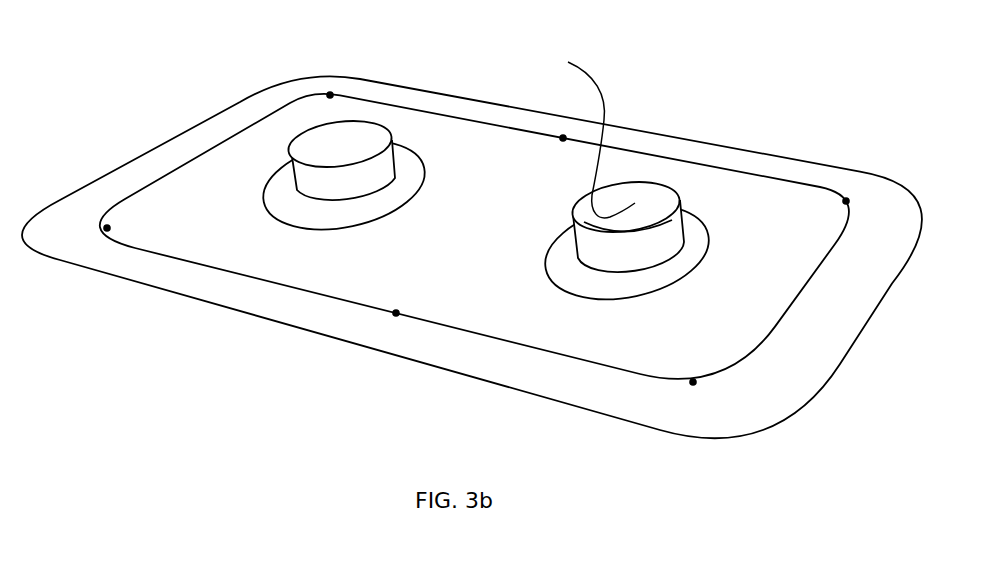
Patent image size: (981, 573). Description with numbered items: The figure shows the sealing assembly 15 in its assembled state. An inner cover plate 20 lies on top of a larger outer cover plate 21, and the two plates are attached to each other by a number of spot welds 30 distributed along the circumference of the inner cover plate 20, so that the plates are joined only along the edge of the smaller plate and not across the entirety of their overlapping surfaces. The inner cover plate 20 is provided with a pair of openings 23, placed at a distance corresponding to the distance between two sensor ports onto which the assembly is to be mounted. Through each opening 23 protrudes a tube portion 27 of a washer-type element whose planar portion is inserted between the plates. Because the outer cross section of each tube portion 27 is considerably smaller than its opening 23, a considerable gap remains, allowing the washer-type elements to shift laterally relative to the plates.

The sealing assembly 15 is at (472, 223).
The inner cover plate 20 is at (230, 180).
The outer cover plate 21 is at (118, 178).
The openings of the inner plate 23 is at (555, 285).
The tube portion 27 is at (380, 172).
The spot welds 30 is at (846, 201).